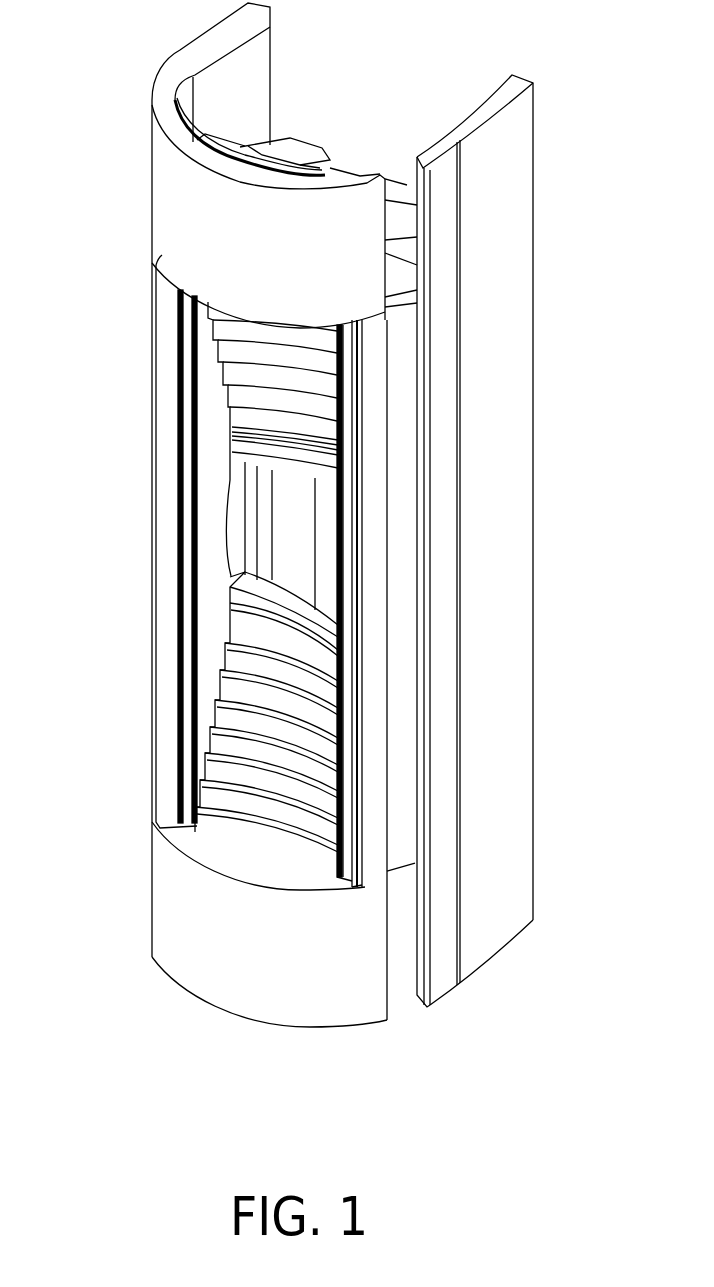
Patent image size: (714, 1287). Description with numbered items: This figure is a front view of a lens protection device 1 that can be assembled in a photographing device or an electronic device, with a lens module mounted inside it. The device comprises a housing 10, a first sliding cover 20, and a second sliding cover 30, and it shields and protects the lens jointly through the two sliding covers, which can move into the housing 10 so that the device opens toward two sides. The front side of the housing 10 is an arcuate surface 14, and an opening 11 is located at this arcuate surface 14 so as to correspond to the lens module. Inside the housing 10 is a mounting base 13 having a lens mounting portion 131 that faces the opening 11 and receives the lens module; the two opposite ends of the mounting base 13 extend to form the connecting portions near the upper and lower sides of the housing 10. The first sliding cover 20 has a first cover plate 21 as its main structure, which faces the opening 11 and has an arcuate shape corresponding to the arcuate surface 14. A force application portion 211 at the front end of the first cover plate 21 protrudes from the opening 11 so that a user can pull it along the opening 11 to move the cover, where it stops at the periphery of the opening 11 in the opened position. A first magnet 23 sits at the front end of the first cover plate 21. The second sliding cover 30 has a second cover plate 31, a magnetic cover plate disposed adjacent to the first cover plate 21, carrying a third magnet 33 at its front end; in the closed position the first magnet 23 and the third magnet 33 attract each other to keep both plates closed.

The lens protection device 1 is at (113, 58).
The housing 10 is at (163, 155).
The mounting base 13 is at (177, 101).
The arcuate surface 14 is at (163, 224).
The opening 11 is at (193, 327).
The first sliding cover 20 is at (165, 425).
The first cover plate 21 is at (163, 350).
The force application portion 211 is at (158, 781).
The first magnet 23 is at (187, 622).
The lens mounting portion 131 is at (237, 523).
The second sliding cover 30 is at (353, 410).
The second cover plate 31 is at (346, 530).
The third magnet 33 is at (338, 838).